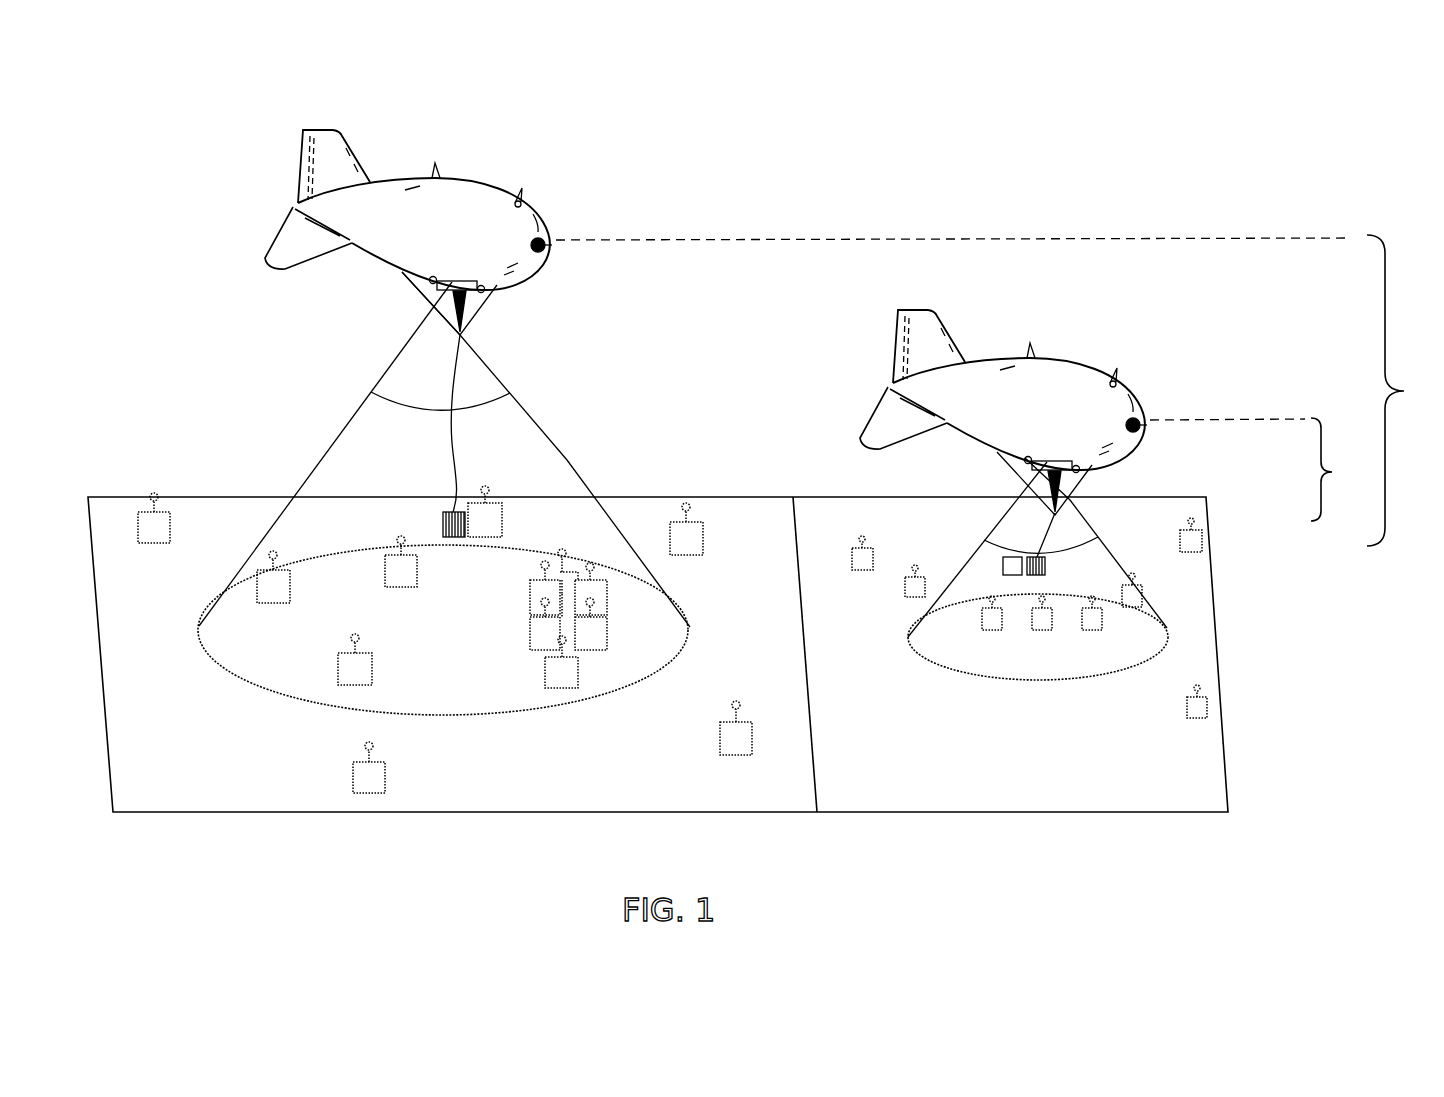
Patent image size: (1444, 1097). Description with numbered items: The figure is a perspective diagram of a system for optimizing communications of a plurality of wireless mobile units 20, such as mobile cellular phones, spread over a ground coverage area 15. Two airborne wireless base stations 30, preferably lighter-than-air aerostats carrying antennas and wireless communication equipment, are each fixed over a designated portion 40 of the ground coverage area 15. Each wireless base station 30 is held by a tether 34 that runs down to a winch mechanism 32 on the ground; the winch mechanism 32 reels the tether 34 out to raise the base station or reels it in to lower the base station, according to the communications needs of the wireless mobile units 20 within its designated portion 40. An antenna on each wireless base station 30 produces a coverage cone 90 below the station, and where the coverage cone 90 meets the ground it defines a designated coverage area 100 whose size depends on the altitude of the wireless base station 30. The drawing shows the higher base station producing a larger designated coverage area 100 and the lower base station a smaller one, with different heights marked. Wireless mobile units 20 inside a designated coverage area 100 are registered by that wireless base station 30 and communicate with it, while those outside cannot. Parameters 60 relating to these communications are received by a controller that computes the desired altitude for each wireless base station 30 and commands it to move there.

The parameters 60 is at (1078, 138).
The wireless base station 30 is at (496, 312).
The tether 34 is at (452, 443).
The winch mechanism 32 is at (457, 510).
The coverage cone 90 is at (347, 425).
The designated portion 40 is at (600, 484).
The ground coverage area 15 is at (700, 437).
The wireless mobile units 20 is at (277, 587).
The designated coverage area 100 is at (662, 634).